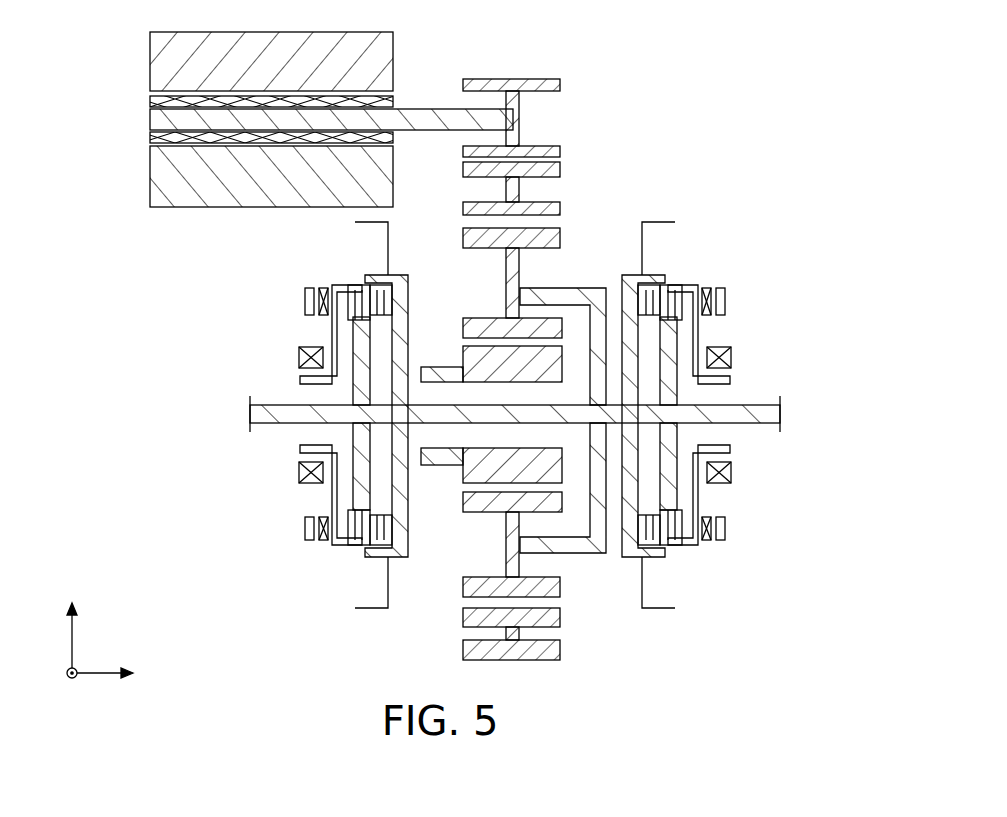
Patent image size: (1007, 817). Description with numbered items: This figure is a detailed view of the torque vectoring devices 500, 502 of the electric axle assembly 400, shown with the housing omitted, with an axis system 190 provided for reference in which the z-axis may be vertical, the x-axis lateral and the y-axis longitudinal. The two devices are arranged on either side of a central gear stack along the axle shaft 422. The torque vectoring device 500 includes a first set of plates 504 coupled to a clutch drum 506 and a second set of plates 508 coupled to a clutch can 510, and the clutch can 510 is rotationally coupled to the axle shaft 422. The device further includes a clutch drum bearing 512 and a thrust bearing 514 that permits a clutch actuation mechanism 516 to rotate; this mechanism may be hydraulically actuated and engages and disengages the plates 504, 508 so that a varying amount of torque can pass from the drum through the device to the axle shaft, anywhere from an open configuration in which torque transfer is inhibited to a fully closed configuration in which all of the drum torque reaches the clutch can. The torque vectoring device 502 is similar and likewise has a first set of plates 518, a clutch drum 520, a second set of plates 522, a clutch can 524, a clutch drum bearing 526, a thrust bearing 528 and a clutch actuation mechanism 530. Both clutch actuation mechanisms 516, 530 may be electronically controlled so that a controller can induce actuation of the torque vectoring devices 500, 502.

The electric axle assembly 400 is at (104, 53).
The axle shaft 422 is at (270, 406).
The torque vectoring device 500 is at (304, 415).
The torque vectoring device 502 is at (758, 415).
The first set of plates 504 is at (372, 298).
The clutch drum 506 is at (358, 290).
The second set of plates 508 is at (352, 318).
The clutch can 510 is at (372, 318).
The clutch drum bearing 512 is at (299, 358).
The thrust bearing 514 is at (322, 517).
The clutch actuation mechanism 516 is at (305, 528).
The first set of plates 518 is at (682, 300).
The clutch drum 520 is at (662, 290).
The second set of plates 522 is at (676, 310).
The clutch can 524 is at (678, 514).
The clutch drum bearing 526 is at (731, 358).
The thrust bearing 528 is at (708, 541).
The clutch actuation mechanism 530 is at (726, 528).
The axis system 190 is at (145, 610).